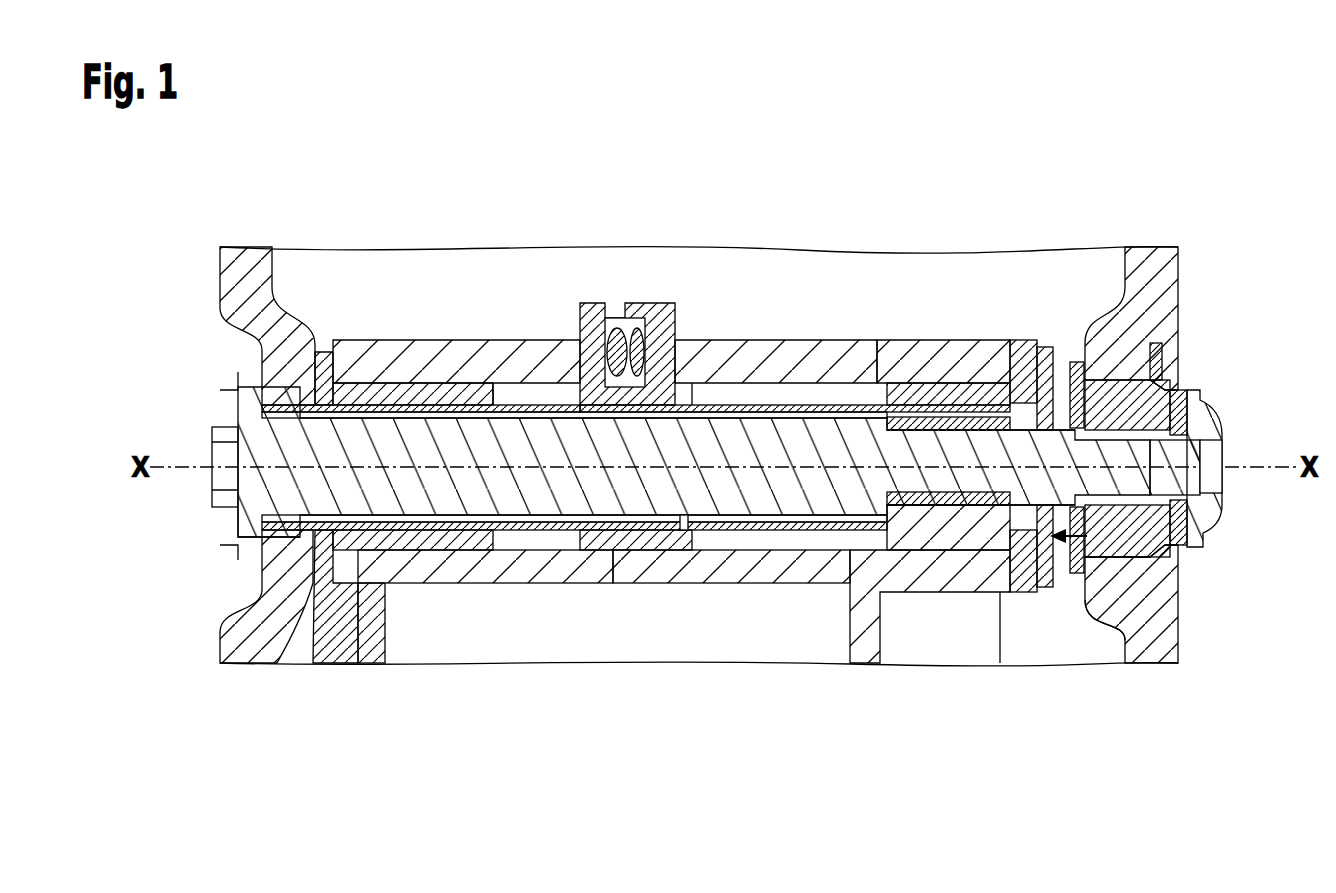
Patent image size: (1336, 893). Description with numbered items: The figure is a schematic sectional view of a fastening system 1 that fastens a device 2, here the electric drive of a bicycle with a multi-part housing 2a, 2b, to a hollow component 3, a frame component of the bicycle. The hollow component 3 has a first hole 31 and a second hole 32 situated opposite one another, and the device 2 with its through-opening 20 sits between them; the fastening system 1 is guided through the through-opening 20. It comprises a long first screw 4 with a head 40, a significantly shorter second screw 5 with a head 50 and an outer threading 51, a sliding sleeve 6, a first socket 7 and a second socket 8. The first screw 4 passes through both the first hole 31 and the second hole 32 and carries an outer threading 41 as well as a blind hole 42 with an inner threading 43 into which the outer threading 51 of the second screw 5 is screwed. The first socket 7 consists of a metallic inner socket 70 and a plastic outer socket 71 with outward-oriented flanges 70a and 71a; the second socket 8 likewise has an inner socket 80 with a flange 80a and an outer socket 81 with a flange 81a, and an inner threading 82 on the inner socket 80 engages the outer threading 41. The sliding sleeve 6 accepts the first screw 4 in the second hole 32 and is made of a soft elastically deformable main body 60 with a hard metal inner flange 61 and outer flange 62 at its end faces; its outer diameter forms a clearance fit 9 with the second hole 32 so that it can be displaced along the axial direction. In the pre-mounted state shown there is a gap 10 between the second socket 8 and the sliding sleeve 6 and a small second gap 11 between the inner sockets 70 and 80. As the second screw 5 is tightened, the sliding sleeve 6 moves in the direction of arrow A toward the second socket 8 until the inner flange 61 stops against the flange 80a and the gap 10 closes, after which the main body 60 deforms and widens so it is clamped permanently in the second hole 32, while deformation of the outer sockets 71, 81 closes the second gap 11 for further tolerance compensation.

The fastening system 1 is at (329, 246).
The device 2 is at (712, 605).
The housing part 2a is at (527, 567).
The housing part 2b is at (820, 570).
The hollow component 3 is at (1165, 642).
The first screw 4 is at (755, 440).
The second screw 5 is at (1221, 428).
The sliding sleeve 6 is at (1205, 360).
The first socket 7 is at (404, 355).
The second socket 8 is at (915, 351).
The clearance fit 9 is at (1131, 578).
The gap 10 is at (1062, 560).
The second gap 11 is at (683, 540).
The through-opening 20 is at (620, 430).
The first hole 31 is at (302, 498).
The second hole 32 is at (1173, 571).
The head 40 is at (238, 403).
The outer threading 41 is at (955, 408).
The blind hole 42 is at (1180, 303).
The inner threading 43 is at (1206, 478).
The head 50 is at (1205, 518).
The outer threading 51 is at (1088, 562).
The main body 60 is at (1155, 345).
The inner flange 61 is at (1076, 375).
The outer flange 62 is at (1202, 392).
The inner socket 70 is at (505, 410).
The flange 70a is at (325, 568).
The outer socket 71 is at (423, 393).
The flange 71a is at (383, 580).
The inner socket 80 is at (840, 405).
The flange 80a is at (1052, 365).
The outer socket 81 is at (905, 392).
The flange 81a is at (1024, 357).
The inner threading 82 is at (1035, 420).
The arrow A is at (1105, 565).